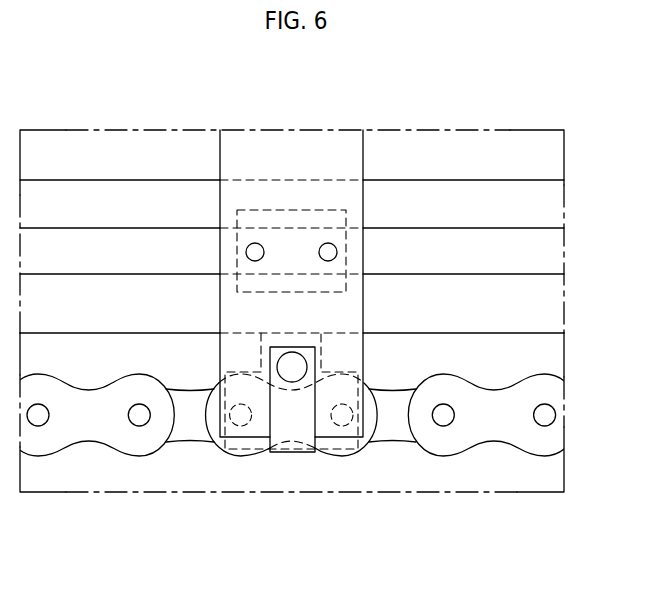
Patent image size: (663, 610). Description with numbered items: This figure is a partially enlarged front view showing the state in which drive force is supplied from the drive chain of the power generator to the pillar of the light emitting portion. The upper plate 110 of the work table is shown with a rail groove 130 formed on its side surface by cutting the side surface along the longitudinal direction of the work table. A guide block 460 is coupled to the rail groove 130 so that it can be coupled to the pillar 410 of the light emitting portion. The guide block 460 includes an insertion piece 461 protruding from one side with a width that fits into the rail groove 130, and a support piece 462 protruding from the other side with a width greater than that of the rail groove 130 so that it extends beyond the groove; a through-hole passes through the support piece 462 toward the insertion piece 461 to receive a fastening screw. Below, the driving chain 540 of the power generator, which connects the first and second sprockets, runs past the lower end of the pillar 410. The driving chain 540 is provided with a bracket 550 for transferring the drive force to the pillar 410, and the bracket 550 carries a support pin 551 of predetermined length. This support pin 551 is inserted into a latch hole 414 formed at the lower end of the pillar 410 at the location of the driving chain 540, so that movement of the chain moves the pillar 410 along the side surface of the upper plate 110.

The upper plate 110 is at (520, 173).
The rail groove 130 is at (450, 247).
The pillar 410 is at (364, 157).
The latch hole 414 is at (280, 453).
The guide block 460 is at (238, 260).
The insertion piece 461 is at (262, 220).
The support piece 462 is at (290, 207).
The driving chain 540 is at (97, 422).
The bracket 550 is at (297, 453).
The support pin 551 is at (294, 372).